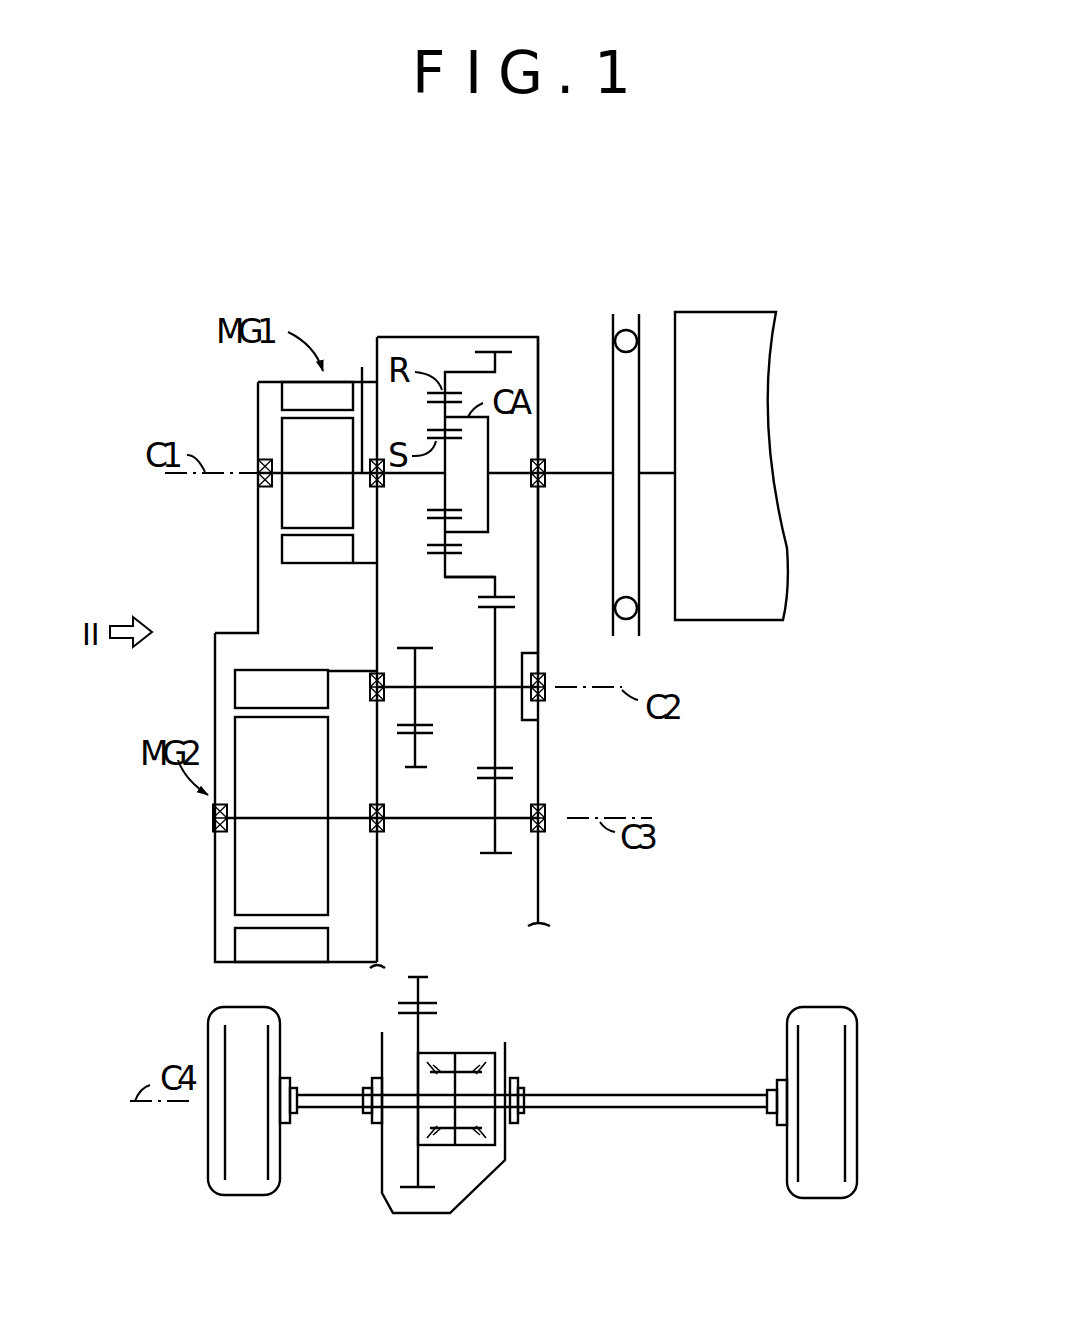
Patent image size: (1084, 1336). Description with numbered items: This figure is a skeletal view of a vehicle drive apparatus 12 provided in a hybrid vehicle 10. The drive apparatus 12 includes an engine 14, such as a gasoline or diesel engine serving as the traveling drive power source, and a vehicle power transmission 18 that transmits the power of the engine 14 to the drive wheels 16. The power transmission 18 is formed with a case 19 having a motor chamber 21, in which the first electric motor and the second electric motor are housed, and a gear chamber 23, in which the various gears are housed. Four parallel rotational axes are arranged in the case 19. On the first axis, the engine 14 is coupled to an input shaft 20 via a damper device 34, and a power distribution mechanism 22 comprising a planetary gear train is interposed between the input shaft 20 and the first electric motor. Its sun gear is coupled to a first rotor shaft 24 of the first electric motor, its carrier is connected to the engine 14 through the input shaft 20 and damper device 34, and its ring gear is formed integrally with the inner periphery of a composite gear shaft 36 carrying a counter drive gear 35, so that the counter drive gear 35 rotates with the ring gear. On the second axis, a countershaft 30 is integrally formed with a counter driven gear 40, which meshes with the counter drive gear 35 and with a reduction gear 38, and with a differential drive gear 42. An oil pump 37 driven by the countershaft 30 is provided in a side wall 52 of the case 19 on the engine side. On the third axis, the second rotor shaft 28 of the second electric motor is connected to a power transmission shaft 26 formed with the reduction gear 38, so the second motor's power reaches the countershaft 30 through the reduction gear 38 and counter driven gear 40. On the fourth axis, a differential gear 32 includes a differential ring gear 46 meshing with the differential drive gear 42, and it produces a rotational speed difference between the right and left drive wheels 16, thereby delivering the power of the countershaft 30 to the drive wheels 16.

The hybrid vehicle 10 is at (400, 243).
The vehicle drive apparatus 12 is at (835, 281).
The engine 14 is at (740, 315).
The drive wheels 16 is at (232, 1017).
The vehicle power transmission 18 is at (303, 276).
The case 19 is at (258, 604).
The input shaft 20 is at (498, 468).
The motor chamber 21 is at (225, 656).
The power distribution mechanism 22 is at (447, 356).
The gear chamber 23 is at (540, 527).
The first rotor shaft 24 is at (355, 402).
The power transmission shaft 26 is at (510, 817).
The second rotor shaft 28 is at (342, 820).
The countershaft 30 is at (507, 696).
The differential gear 32 is at (480, 1167).
The damper device 34 is at (630, 283).
The counter drive gear 35 is at (506, 597).
The composite gear shaft 36 is at (453, 581).
The oil pump 37 is at (540, 664).
The reduction gear 38 is at (482, 860).
The counter driven gear 40 is at (497, 614).
The differential drive gear 42 is at (417, 727).
The differential ring gear 46 is at (418, 735).
The side wall 52 is at (540, 406).